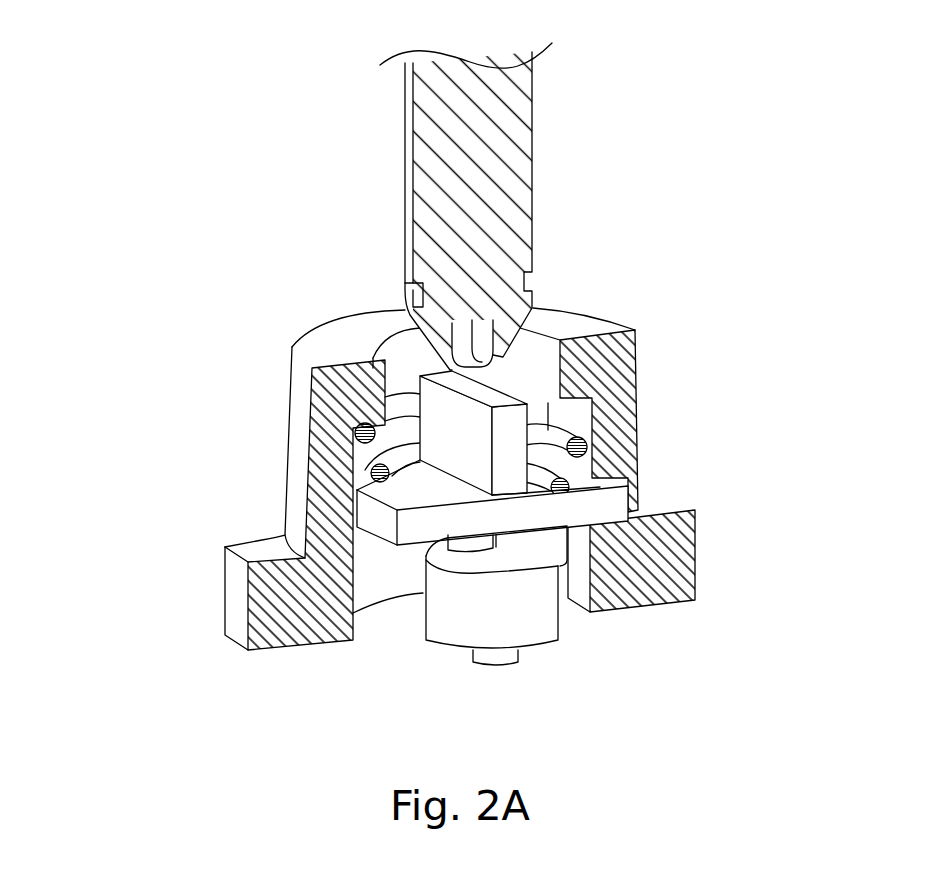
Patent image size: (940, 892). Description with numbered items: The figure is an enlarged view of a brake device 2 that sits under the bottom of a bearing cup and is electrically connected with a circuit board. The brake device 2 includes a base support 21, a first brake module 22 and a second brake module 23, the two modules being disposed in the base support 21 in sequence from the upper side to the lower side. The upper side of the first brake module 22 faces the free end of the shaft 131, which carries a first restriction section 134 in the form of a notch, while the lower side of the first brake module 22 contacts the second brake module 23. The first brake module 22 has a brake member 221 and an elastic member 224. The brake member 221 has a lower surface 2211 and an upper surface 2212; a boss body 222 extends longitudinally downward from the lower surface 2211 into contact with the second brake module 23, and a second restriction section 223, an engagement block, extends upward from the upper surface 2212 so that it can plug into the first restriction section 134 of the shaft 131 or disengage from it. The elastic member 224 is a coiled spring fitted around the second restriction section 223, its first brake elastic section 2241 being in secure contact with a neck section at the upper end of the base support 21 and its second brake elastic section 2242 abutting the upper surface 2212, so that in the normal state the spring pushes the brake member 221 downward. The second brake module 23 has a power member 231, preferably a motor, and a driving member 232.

The shaft 131 is at (507, 160).
The first restriction section 134 is at (480, 342).
The brake device 2 is at (503, 411).
The base support 21 is at (618, 368).
The first brake module 22 is at (503, 528).
The second brake module 23 is at (630, 625).
The brake member 221 is at (461, 531).
The lower surface 2211 is at (423, 543).
The upper surface 2212 is at (402, 497).
The boss body 222 is at (440, 555).
The second restriction section 223 is at (512, 458).
The elastic member 224 is at (338, 423).
The first brake elastic section 2241 is at (400, 410).
The second brake elastic section 2242 is at (370, 460).
The power member 231 is at (545, 617).
The driving member 232 is at (555, 540).